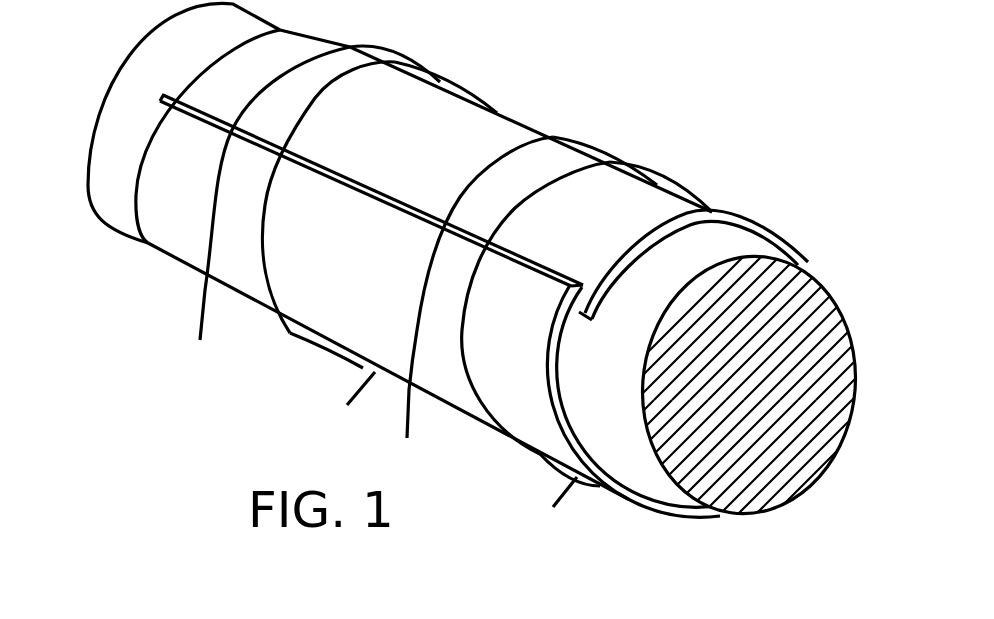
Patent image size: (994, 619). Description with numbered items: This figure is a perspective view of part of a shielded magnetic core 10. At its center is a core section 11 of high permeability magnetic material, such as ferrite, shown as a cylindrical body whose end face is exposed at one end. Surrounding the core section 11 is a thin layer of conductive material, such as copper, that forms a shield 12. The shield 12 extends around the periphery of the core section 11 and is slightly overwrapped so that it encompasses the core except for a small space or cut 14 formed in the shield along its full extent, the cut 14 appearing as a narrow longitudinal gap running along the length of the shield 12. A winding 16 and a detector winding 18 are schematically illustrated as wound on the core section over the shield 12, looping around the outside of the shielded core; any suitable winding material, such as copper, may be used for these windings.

The shielded magnetic core 10 is at (213, 353).
The core section 11 is at (750, 510).
The shield 12 is at (517, 120).
The cut 14 is at (578, 312).
The winding 16 is at (390, 50).
The detector winding 18 is at (664, 170).